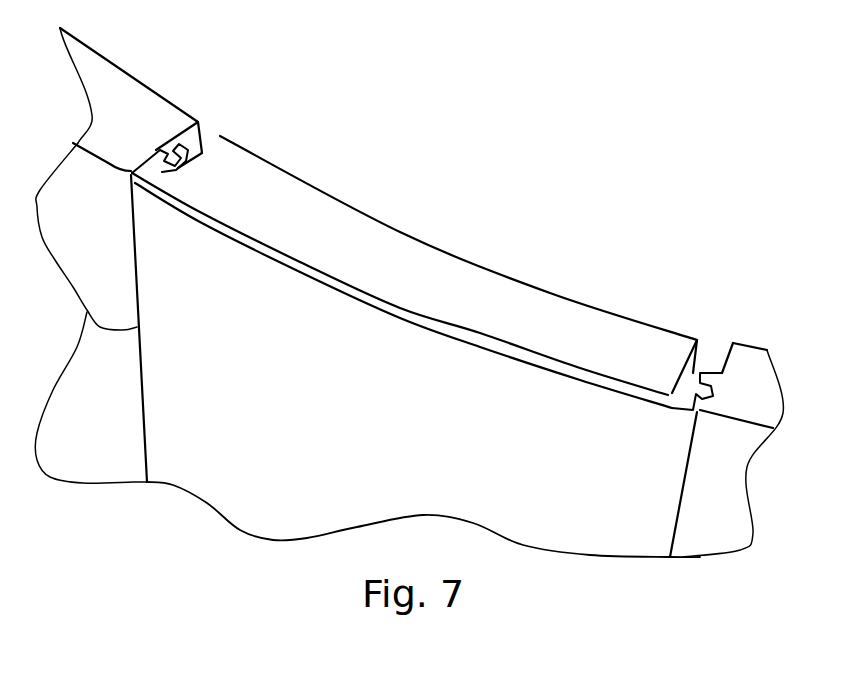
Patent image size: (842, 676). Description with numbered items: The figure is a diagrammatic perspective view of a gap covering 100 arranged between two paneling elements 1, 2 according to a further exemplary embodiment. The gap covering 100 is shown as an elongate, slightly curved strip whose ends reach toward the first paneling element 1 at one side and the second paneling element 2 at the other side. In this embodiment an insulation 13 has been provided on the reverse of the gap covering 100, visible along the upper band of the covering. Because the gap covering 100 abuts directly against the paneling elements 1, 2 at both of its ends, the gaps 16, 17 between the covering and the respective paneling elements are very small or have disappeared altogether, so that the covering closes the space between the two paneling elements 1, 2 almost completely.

The paneling element 1 is at (133, 108).
The paneling element 2 is at (753, 363).
The insulation 13 is at (320, 215).
The gap 16 is at (87, 312).
The gap 17 is at (687, 482).
The gap covering 100 is at (445, 214).